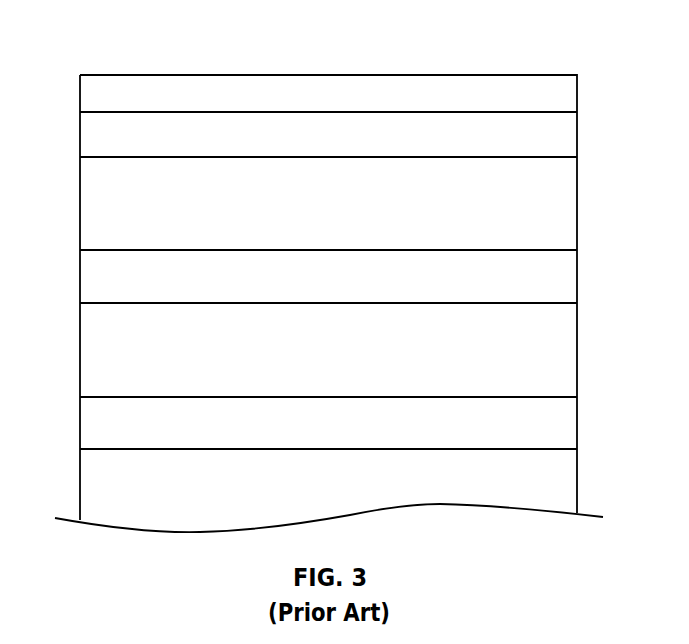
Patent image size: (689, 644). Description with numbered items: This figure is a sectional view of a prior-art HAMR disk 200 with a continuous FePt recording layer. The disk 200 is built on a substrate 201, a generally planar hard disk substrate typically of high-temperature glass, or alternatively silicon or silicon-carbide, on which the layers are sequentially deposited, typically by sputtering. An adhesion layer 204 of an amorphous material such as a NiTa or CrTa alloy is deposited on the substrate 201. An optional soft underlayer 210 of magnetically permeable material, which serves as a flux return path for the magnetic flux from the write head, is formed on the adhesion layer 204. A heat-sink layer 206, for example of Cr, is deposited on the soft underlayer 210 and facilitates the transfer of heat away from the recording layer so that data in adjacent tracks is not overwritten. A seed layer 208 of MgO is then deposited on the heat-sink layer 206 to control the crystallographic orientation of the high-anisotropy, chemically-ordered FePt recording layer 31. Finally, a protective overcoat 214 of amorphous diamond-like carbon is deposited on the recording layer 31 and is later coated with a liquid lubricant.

The HAMR disk 200 is at (116, 56).
The protective overcoat 214 is at (570, 97).
The continuous recording layer 31 is at (571, 138).
The seed layer 208 is at (572, 214).
The heat-sink layer 206 is at (567, 283).
The soft underlayer 210 is at (572, 372).
The adhesion layer 204 is at (565, 430).
The substrate 201 is at (570, 490).